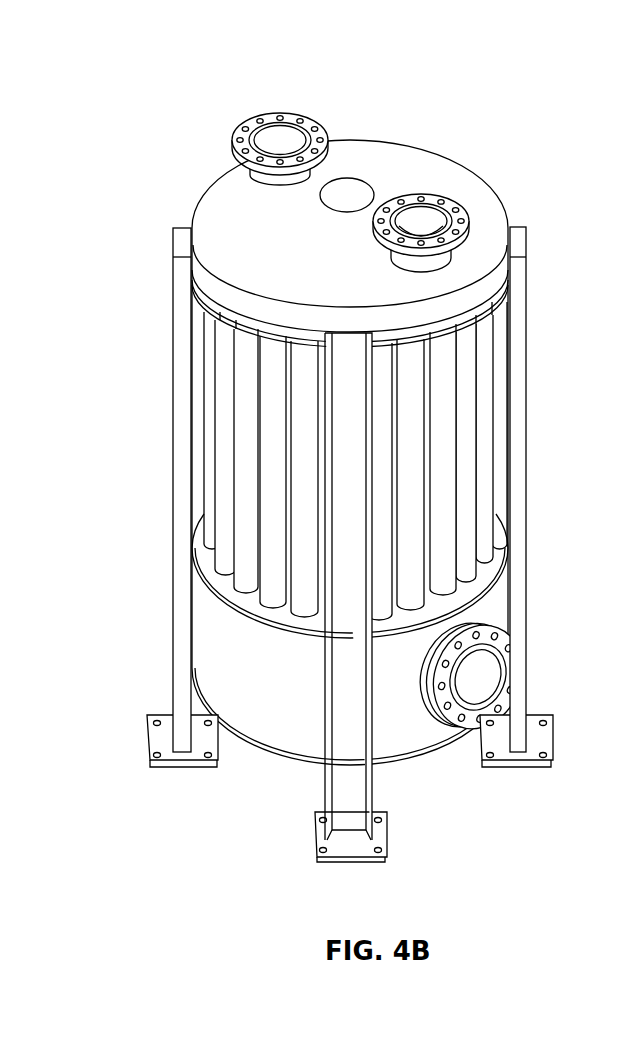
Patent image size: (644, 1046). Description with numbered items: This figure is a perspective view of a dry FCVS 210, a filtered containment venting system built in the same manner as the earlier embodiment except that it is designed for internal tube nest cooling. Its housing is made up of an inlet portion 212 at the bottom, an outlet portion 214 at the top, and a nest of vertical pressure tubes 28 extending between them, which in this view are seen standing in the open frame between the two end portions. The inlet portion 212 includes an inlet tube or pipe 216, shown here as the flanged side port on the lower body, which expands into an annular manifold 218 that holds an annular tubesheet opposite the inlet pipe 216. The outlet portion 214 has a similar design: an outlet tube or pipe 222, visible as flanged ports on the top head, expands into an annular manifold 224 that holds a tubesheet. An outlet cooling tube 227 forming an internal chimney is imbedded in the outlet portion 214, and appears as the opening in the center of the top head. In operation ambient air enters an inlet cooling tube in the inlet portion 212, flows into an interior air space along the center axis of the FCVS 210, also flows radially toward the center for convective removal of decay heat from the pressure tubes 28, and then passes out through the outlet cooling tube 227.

The dry FCVS 210 is at (122, 765).
The inlet portion 212 is at (447, 757).
The outlet portion 214 is at (205, 162).
The inlet tube or pipe 216 is at (482, 685).
The annular manifold 218 is at (303, 725).
The outlet tube or pipe 222 is at (262, 108).
The annular manifold 224 is at (242, 260).
The outlet cooling tube 227 is at (350, 187).
The pressure tubes 28 is at (245, 445).